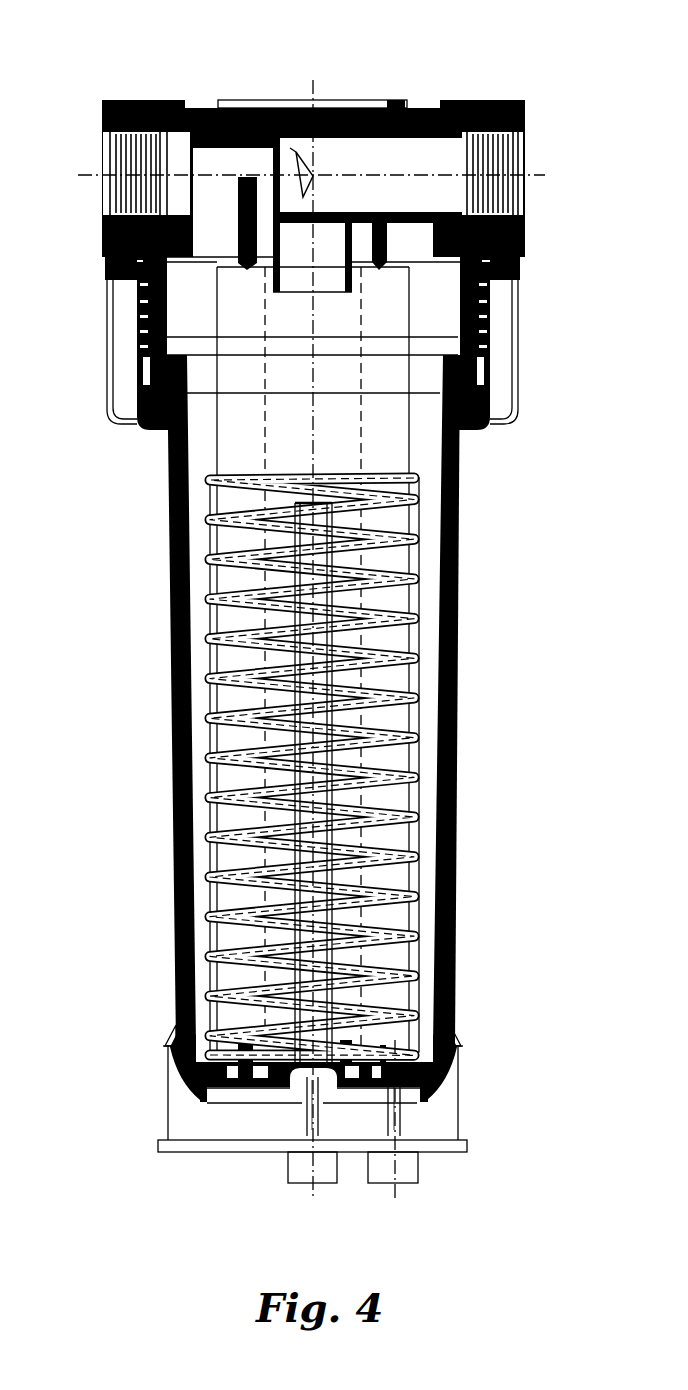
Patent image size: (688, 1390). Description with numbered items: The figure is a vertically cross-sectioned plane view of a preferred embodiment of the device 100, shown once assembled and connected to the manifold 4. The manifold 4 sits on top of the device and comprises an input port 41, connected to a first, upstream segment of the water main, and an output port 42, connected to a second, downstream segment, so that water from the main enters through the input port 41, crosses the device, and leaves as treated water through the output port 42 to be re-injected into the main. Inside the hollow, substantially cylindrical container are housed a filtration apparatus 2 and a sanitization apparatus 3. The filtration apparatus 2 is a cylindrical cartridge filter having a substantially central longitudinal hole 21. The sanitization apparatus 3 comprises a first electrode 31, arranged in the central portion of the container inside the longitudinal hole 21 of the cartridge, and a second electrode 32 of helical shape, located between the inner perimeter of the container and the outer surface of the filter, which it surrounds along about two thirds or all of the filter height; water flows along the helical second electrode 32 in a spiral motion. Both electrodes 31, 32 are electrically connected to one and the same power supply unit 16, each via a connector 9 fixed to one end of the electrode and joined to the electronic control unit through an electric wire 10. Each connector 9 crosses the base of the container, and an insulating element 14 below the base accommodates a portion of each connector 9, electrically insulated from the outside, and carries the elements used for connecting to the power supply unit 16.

The device 100 is at (518, 796).
The filtration apparatus 2 is at (418, 447).
The longitudinal hole 21 is at (265, 443).
The sanitization apparatus 3 is at (228, 699).
The first electrode 31 is at (340, 915).
The second electrode 32 is at (385, 650).
The manifold 4 is at (483, 90).
The input port 41 is at (102, 165).
The output port 42 is at (524, 165).
The connector 9 is at (305, 1117).
The electric wire 10 is at (313, 1190).
The insulating element 14 is at (448, 1098).
The power supply unit 16 is at (288, 1165).